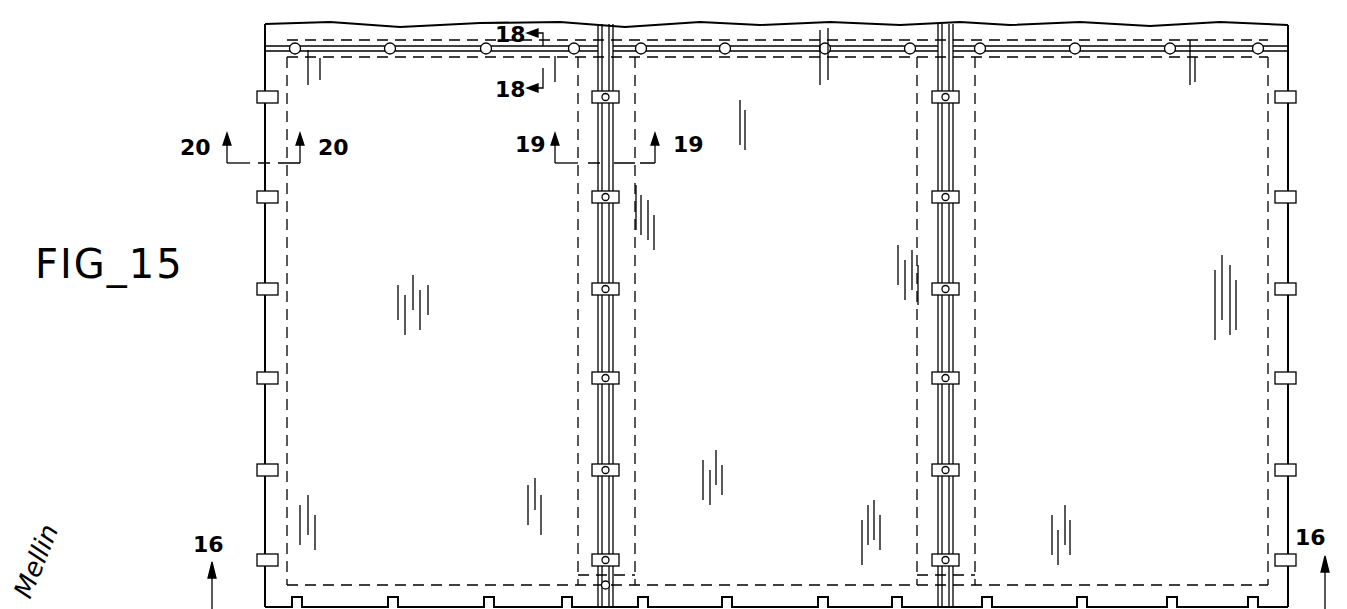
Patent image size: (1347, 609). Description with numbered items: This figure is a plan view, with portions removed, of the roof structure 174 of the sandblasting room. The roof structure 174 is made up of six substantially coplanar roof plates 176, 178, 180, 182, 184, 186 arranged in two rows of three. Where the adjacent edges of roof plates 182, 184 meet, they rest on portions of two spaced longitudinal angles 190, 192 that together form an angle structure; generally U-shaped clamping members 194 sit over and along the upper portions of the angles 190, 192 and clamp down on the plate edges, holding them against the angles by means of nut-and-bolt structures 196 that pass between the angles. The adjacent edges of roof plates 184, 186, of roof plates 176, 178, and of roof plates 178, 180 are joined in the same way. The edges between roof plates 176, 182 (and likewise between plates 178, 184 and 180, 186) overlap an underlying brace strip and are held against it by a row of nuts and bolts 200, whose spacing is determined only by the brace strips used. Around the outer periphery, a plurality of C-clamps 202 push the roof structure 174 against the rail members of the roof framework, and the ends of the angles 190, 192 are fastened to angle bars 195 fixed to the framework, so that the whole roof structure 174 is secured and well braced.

The roof structure 174 is at (1233, 326).
The roof plate 176 is at (478, 46).
The roof plate 178 is at (783, 46).
The roof plate 180 is at (1128, 46).
The roof plate 182 is at (446, 413).
The roof plate 184 is at (793, 413).
The roof plate 186 is at (1136, 413).
The longitudinal angle 190 is at (588, 362).
The longitudinal angle 192 is at (625, 362).
The clamping member 194 is at (595, 205).
The angle bar 195 is at (627, 584).
The nut-and-bolt structure 196 is at (615, 290).
The nuts and bolts 200 is at (486, 55).
The C-clamp 202 is at (274, 287).